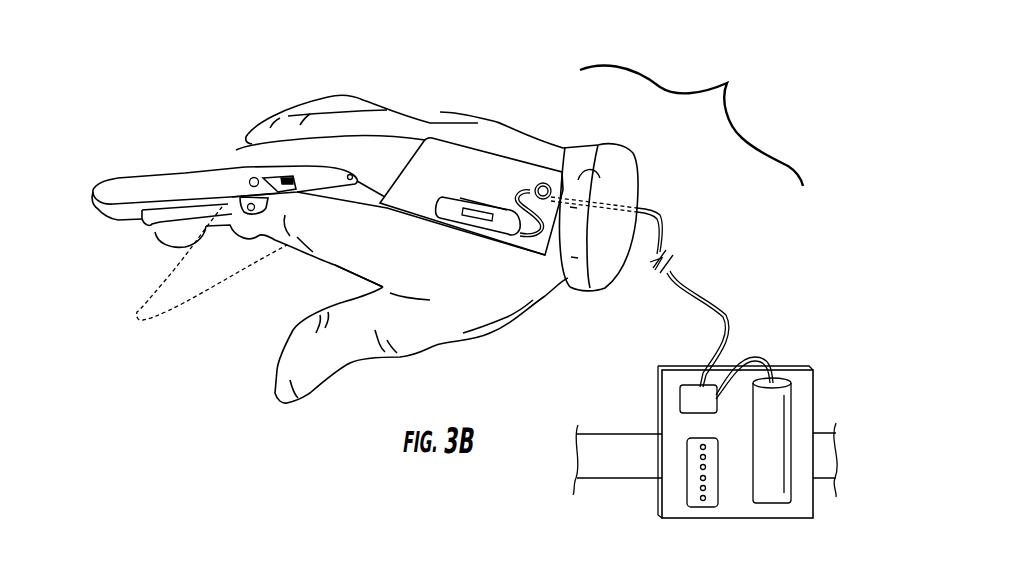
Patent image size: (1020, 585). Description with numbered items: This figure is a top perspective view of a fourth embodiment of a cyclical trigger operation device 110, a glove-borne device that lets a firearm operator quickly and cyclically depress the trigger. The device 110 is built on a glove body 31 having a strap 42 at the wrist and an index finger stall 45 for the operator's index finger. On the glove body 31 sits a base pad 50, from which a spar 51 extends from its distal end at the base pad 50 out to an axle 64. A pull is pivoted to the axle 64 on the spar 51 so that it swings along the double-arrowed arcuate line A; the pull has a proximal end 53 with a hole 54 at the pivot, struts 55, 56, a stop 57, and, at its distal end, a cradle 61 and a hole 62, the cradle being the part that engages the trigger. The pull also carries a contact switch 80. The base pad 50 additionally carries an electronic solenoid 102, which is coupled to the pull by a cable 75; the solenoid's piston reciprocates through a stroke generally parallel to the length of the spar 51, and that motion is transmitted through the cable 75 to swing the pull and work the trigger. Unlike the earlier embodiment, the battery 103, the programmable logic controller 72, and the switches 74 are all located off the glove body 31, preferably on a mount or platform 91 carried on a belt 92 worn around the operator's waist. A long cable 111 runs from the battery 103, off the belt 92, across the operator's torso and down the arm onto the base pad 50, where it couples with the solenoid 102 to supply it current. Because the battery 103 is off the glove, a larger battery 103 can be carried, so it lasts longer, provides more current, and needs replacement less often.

The index finger stall 45 is at (147, 177).
The strut 55 is at (251, 178).
The stop 57 is at (288, 175).
The proximal end 53 is at (353, 175).
The hole 54 is at (355, 175).
The base pad 50 is at (452, 135).
The glove body 31 is at (523, 133).
The strap 42 is at (580, 292).
The cable 75 is at (400, 208).
The electronic solenoid 102 is at (476, 226).
The cradle 61 is at (107, 220).
The hole 62 is at (123, 229).
The contact switch 80 is at (138, 222).
The double-arrowed arcuate line A is at (107, 222).
The strut 56 is at (228, 200).
The axle 64 is at (265, 190).
The spar 51 is at (337, 212).
The cyclical trigger operation device 110 is at (691, 121).
The long cable 111 is at (660, 222).
The programmable logic controller 72 is at (680, 397).
The battery 103 is at (790, 395).
The mount or platform 91 is at (747, 518).
The belt 92 is at (617, 480).
The switches 74 is at (687, 497).